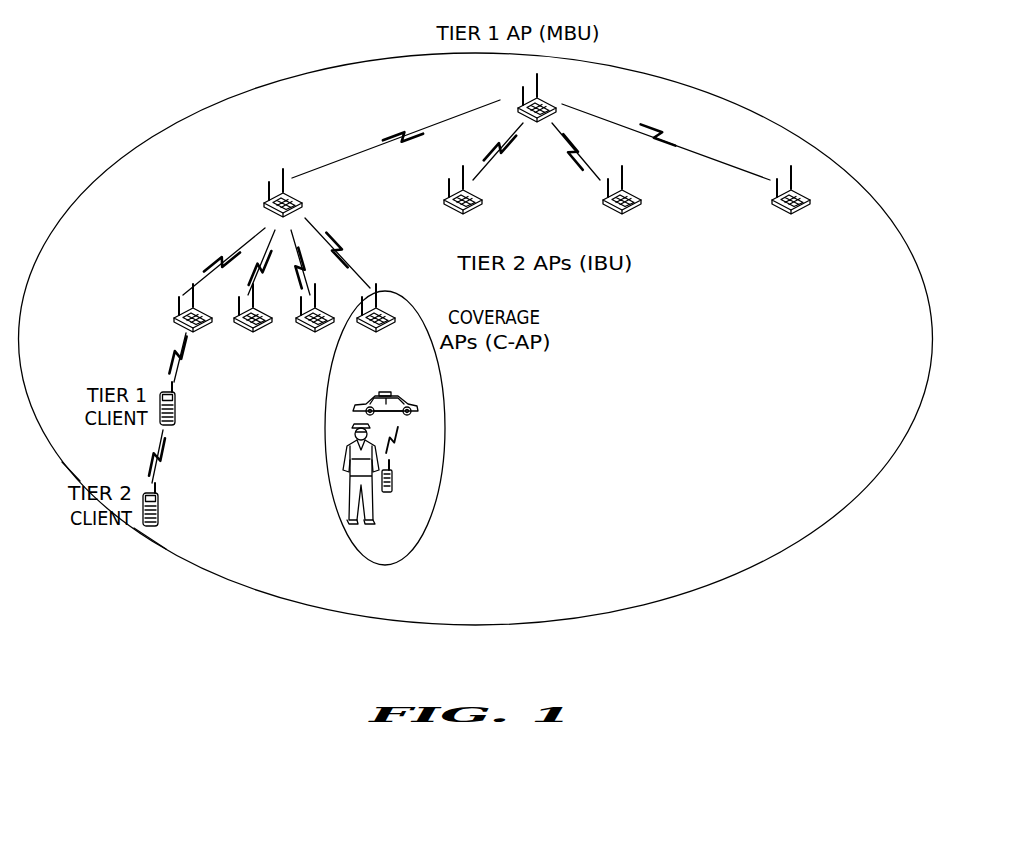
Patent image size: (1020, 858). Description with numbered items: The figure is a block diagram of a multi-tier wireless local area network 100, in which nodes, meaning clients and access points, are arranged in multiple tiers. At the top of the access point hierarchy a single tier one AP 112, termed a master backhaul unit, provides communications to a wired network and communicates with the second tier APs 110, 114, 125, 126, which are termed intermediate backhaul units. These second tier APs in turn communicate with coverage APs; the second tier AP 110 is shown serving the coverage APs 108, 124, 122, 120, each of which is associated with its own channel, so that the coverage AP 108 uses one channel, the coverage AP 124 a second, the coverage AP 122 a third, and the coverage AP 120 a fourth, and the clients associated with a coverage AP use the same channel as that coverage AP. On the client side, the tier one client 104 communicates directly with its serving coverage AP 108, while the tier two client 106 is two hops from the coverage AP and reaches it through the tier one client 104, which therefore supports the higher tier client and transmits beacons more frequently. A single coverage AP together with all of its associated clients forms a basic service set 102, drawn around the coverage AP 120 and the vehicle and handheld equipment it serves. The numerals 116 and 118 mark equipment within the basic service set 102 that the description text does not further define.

The multi-tier wireless local area network 100 is at (698, 665).
The basic service set 102 is at (427, 543).
The tier 1 client 104 is at (175, 413).
The tier 2 client 106 is at (158, 515).
The coverage AP 11 108 is at (179, 302).
The second tier AP 110 is at (269, 186).
The tier 1 AP 112 is at (523, 86).
The second tier AP 114 is at (449, 180).
The PCMCIA client device 116 is at (463, 487).
The vehicle communication box (VCB) 118 is at (452, 435).
The coverage AP 14 120 is at (388, 294).
The coverage AP 13 122 is at (301, 302).
The coverage AP 12 124 is at (239, 302).
The second tier AP 125 is at (608, 180).
The second tier AP 126 is at (777, 180).